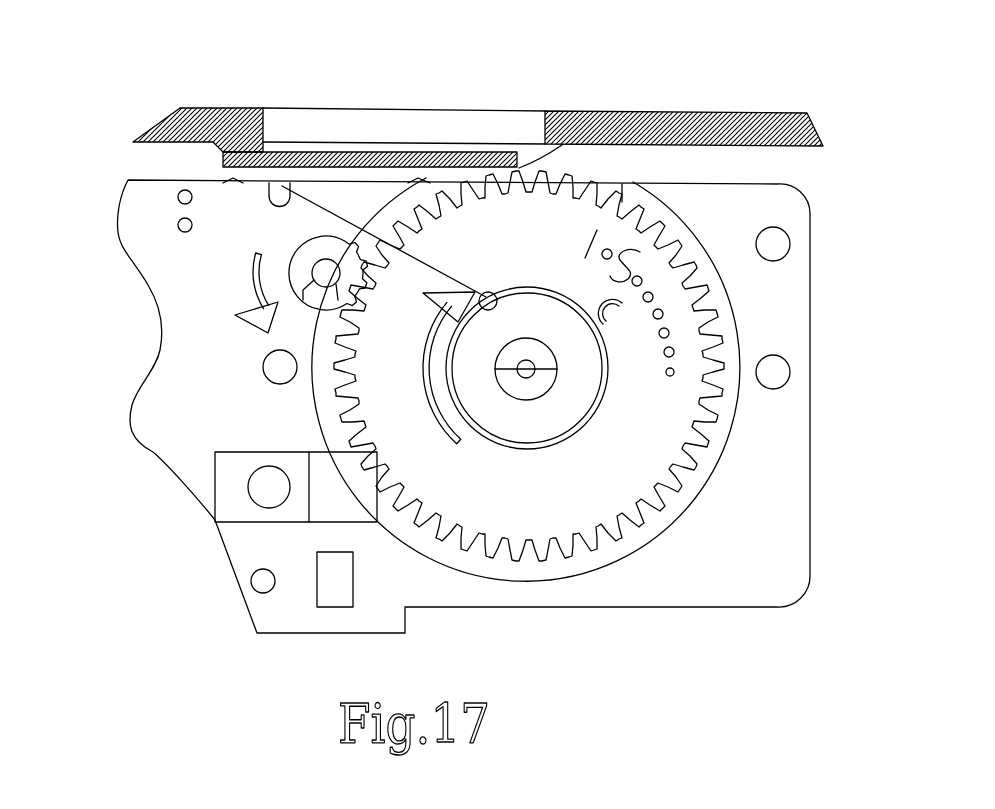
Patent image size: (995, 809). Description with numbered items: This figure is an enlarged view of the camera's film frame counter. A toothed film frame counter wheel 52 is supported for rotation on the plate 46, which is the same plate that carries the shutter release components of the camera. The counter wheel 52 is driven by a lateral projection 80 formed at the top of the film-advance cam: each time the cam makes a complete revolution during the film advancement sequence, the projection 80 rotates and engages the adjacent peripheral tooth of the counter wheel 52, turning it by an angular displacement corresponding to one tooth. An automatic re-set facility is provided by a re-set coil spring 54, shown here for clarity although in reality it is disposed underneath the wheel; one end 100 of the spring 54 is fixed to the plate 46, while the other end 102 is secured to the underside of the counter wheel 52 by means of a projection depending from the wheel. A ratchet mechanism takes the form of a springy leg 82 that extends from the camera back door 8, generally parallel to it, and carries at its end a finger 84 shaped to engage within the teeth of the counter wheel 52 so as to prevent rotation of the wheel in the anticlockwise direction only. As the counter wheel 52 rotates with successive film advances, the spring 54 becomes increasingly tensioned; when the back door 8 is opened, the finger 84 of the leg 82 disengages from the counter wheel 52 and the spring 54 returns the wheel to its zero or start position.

The camera back door 8 is at (505, 133).
The plate 46 is at (694, 546).
The film frame counter wheel 52 is at (412, 397).
The re-set coil spring 54 is at (608, 378).
The lateral projection 80 is at (292, 258).
The springy leg 82 is at (432, 152).
The finger 84 is at (633, 112).
The end of coil spring 100 is at (262, 172).
The end of coil spring 102 is at (624, 305).